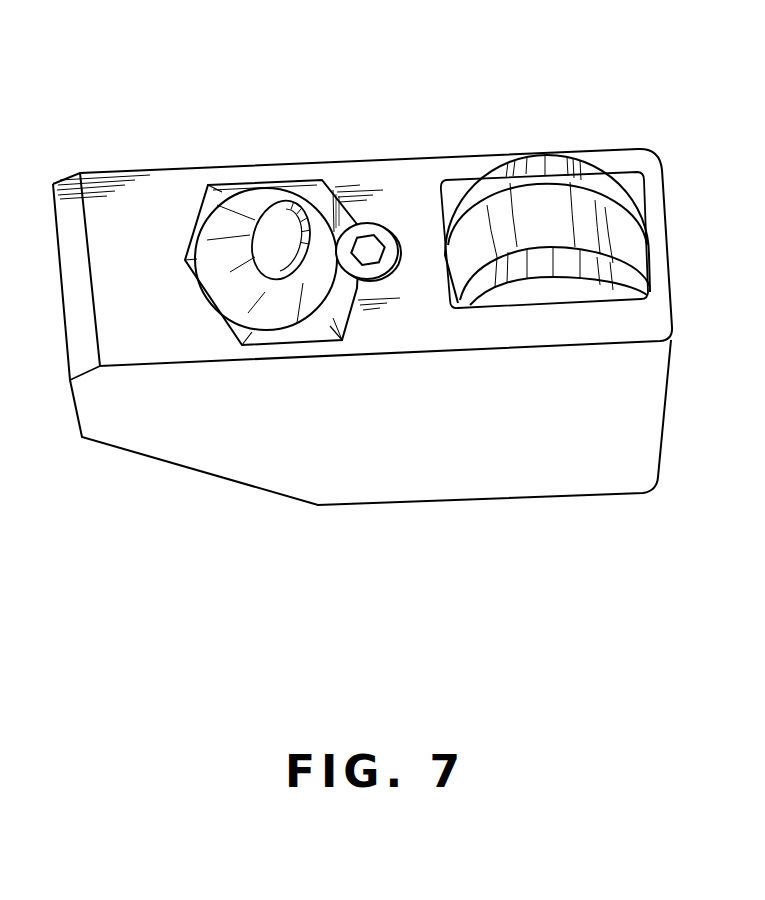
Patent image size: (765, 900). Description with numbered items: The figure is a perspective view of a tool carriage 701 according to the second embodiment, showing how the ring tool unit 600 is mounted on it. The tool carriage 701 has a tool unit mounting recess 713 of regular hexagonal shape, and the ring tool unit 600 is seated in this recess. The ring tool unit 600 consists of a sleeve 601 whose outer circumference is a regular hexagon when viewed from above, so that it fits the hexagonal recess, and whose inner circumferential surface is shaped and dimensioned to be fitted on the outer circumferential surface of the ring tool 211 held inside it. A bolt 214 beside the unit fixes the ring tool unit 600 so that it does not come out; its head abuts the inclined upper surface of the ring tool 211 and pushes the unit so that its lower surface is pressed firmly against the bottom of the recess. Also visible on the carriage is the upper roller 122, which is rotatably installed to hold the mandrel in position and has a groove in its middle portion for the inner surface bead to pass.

The tool carriage 701 is at (417, 455).
The upper roller 122 is at (553, 163).
The ring tool unit 600 is at (284, 198).
The sleeve 601 is at (212, 184).
The ring tool 211 is at (266, 218).
The tool unit mounting recess 713 is at (316, 192).
The bolt 214 is at (373, 230).